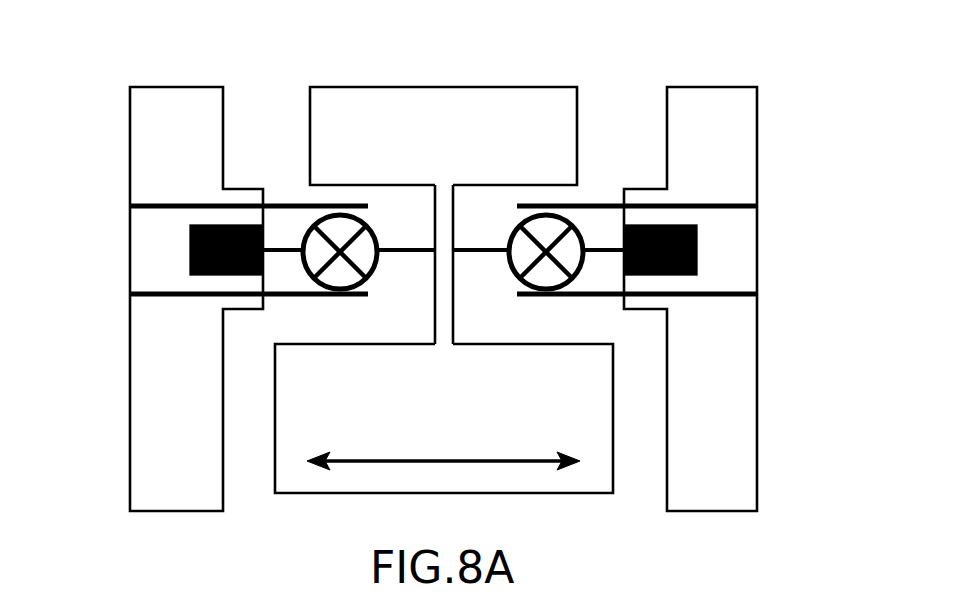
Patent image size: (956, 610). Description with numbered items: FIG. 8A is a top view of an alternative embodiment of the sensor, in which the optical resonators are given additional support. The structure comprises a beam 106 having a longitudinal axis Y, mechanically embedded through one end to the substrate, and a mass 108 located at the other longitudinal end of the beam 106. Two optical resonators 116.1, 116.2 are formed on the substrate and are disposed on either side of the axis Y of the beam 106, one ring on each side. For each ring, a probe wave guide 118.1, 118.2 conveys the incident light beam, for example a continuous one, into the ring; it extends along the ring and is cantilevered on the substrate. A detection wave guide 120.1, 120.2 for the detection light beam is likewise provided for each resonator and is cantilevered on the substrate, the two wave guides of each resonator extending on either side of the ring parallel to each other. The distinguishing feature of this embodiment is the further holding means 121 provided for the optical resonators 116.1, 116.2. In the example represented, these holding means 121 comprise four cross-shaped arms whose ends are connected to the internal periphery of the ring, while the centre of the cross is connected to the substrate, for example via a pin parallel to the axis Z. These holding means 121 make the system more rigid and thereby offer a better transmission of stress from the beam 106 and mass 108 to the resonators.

The beam 106 is at (453, 204).
The mass 108 is at (590, 480).
The optical resonator 116.1 is at (564, 222).
The optical resonator 116.2 is at (320, 222).
The probe wave guide 118.1 is at (740, 207).
The probe wave guide 118.2 is at (155, 207).
The detection wave guide 120.1 is at (742, 296).
The detection wave guide 120.2 is at (155, 296).
The further holding means 121 is at (355, 258).